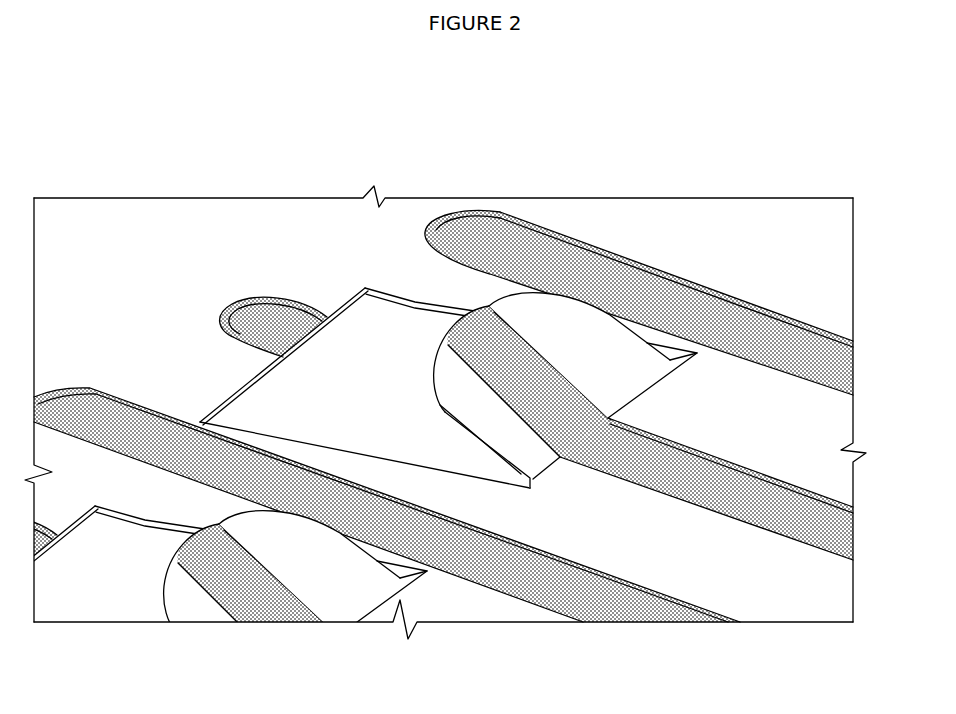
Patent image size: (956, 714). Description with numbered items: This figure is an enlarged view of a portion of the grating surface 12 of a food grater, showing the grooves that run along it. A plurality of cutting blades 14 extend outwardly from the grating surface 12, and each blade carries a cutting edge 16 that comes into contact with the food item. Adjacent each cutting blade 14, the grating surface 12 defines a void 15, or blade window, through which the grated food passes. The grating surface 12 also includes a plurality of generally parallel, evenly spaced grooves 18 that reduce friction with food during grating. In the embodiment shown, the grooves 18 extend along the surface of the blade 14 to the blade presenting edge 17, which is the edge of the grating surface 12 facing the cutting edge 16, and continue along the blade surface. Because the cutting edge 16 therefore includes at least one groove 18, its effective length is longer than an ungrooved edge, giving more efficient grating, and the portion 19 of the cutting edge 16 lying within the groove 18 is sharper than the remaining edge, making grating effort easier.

The grating surface 12 is at (136, 272).
The cutting blade 14 is at (549, 330).
The void 15 is at (377, 398).
The cutting edge 16 is at (493, 299).
The blade presenting edge 17 is at (335, 313).
The grooves 18 is at (623, 290).
The portion of the cutting edge within the groove 19 is at (460, 324).